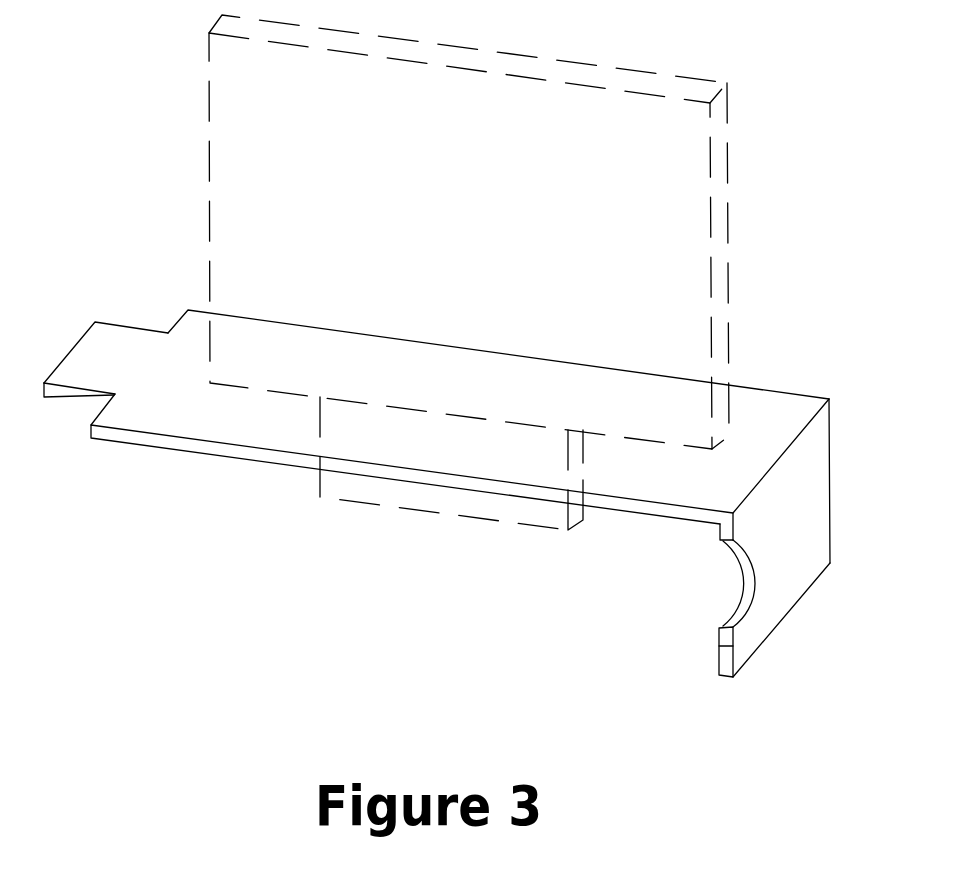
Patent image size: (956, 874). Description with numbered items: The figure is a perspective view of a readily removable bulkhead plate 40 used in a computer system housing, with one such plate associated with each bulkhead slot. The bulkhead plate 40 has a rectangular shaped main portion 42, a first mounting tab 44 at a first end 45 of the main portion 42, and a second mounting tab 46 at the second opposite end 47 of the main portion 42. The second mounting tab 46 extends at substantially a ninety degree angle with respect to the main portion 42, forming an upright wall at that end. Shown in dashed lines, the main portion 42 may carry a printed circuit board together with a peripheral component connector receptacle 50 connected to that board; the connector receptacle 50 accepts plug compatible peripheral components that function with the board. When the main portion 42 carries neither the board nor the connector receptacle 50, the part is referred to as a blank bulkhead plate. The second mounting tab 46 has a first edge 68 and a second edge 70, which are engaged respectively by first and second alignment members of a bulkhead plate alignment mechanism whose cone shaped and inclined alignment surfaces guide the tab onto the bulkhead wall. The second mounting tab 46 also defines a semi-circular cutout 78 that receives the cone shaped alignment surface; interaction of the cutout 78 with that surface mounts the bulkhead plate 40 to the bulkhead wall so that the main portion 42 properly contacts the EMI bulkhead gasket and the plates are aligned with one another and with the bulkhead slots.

The bulkhead plate 40 is at (766, 419).
The main portion 42 is at (181, 427).
The first mounting tab 44 is at (72, 377).
The first end 45 is at (106, 413).
The second mounting tab 46 is at (825, 508).
The second end 47 is at (717, 505).
The peripheral component connector receptacle 50 is at (456, 500).
The first edge 68 is at (719, 646).
The second edge 70 is at (831, 455).
The semi-circular cutout 78 is at (750, 575).